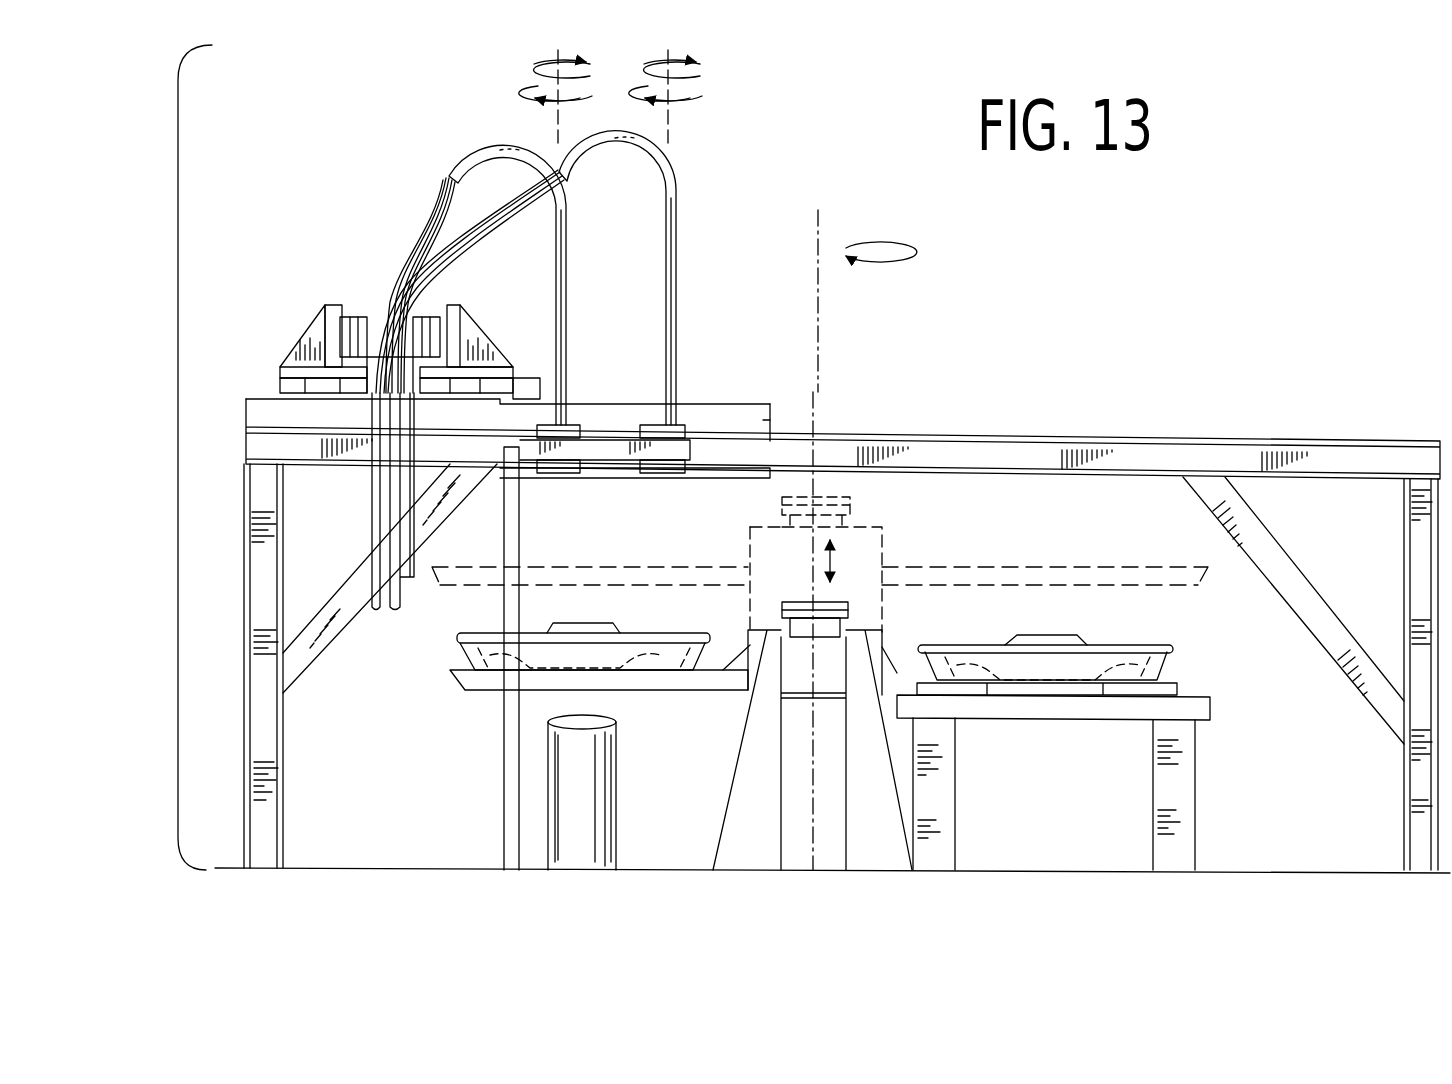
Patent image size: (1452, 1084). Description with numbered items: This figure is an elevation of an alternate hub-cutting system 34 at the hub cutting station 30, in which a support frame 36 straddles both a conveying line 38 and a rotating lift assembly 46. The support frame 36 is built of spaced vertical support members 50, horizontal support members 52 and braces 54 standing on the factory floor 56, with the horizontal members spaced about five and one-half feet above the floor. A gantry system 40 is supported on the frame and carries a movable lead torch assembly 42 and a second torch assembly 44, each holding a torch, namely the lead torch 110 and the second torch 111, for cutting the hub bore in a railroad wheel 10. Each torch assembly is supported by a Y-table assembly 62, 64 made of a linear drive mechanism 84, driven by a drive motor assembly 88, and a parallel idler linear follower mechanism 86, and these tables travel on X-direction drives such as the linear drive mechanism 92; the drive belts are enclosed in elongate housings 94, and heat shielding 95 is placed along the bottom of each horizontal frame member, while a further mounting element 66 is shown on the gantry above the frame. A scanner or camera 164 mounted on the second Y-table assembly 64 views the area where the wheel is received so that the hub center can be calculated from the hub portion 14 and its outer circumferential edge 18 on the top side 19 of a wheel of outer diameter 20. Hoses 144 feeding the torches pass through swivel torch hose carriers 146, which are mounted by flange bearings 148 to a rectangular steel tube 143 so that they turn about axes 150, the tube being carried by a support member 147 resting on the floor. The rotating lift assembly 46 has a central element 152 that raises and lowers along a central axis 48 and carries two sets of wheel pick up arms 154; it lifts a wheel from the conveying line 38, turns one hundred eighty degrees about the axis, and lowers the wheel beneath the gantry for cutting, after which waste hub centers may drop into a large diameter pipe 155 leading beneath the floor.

The railroad wheel 10 is at (827, 645).
The inner central hub portion 14 is at (572, 628).
The outer circumferential edge 18 is at (617, 625).
The top side 19 is at (985, 648).
The outer diameter 20 is at (458, 633).
The hub cutting station 30 is at (174, 482).
The hub-cutting system 34 is at (843, 429).
The support frame 36 is at (1360, 470).
The conveying line 38 is at (1200, 718).
The gantry system 40 is at (634, 447).
The lead torch assembly 42 is at (301, 332).
The second torch assembly 44 is at (476, 328).
The rotating lift assembly 46 is at (734, 698).
The central axis 48 is at (822, 222).
The vertical support members 50 is at (283, 547).
The horizontal support members 52 is at (1188, 460).
The braces 54 is at (343, 600).
The factory floor 56 is at (440, 868).
The Y-table assembly 62 is at (282, 378).
The second Y-table assembly 64 is at (497, 377).
The mounting plate 66 is at (602, 412).
The linear drive mechanism 84 is at (300, 380).
The linear follower mechanism 86 is at (428, 383).
The drive motor assembly 88 is at (252, 414).
The X-direction linear drive mechanism 92 is at (698, 410).
The elongate housing 94 is at (768, 421).
The heat shielding 95 is at (747, 482).
The lead torch 110 is at (388, 607).
The second torch 111 is at (407, 605).
The rectangular steel tube 143 is at (533, 443).
The hoses 144 is at (440, 212).
The swivel torch hose carriers 146 is at (660, 302).
The support member 147 is at (513, 542).
The flange bearings 148 is at (677, 465).
The axes 150 is at (558, 54).
The central element 152 is at (840, 623).
The wheel pick up arms 154 is at (477, 690).
The large diameter pipe 155 is at (605, 808).
The scanner or camera 164 is at (530, 393).